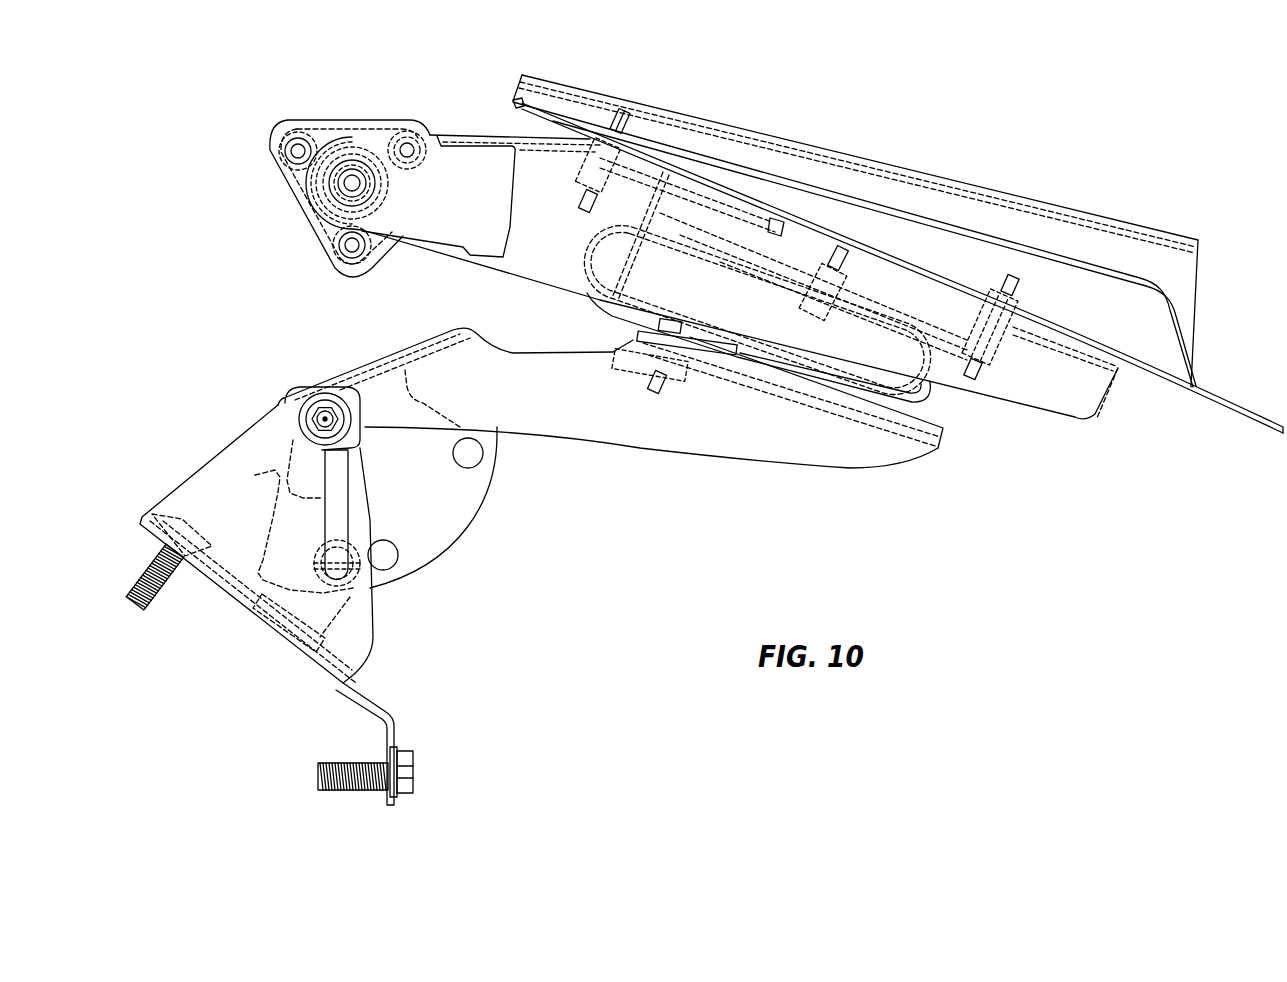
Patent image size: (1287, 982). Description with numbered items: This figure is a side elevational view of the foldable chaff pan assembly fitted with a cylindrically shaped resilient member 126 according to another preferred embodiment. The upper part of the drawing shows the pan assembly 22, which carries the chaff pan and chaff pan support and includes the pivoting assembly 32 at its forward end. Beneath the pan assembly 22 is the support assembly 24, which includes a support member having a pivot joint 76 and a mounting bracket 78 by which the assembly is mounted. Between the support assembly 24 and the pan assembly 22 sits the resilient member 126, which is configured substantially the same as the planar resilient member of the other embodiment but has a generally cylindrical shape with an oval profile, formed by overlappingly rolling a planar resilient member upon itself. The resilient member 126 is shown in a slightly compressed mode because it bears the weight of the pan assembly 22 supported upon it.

The pan assembly 22 is at (1024, 186).
The support assembly 24 is at (847, 472).
The pivoting assembly 32 is at (345, 117).
The pivot joint 76 is at (458, 523).
The mounting bracket 78 is at (268, 650).
The resilient member 126 is at (931, 391).